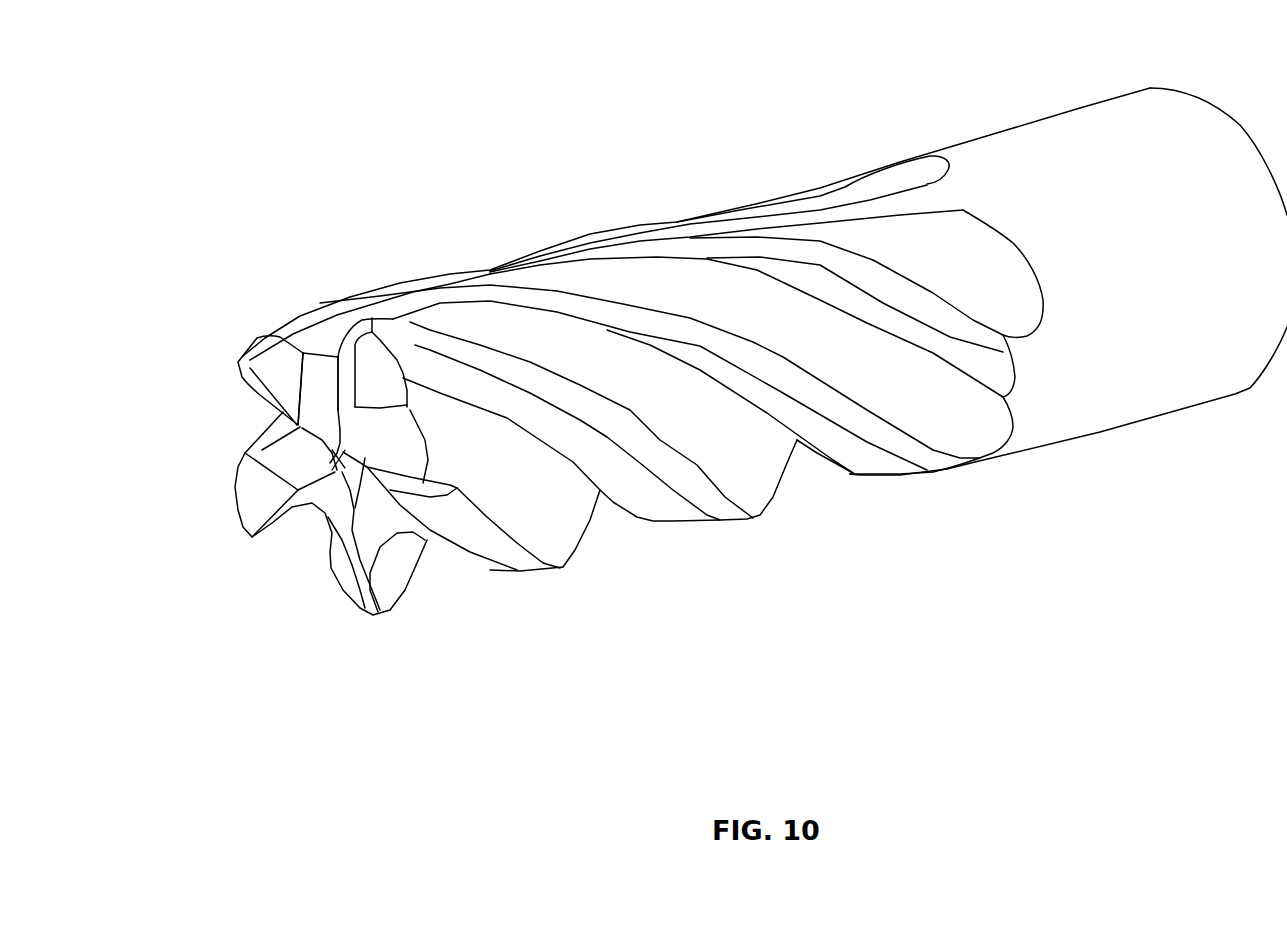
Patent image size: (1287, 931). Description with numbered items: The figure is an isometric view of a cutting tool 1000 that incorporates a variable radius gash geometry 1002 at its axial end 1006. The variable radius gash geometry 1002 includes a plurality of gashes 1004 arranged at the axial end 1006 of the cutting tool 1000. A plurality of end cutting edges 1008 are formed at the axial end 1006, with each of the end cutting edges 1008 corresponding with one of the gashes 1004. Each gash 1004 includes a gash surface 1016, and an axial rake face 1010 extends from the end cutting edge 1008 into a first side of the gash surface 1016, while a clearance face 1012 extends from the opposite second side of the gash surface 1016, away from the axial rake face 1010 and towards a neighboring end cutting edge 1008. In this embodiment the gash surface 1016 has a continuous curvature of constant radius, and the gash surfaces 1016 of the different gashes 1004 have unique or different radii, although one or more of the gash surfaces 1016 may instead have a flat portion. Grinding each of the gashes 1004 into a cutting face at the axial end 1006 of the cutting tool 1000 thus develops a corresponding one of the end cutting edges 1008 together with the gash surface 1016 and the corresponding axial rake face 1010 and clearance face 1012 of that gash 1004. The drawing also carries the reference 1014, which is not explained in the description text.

The cutting tool 1000 is at (696, 142).
The variable radius gash geometry 1002 is at (238, 256).
The gash 1004 is at (302, 536).
The axial end 1006 is at (212, 586).
The end cutting edge 1008 is at (258, 392).
The axial rake face 1010 is at (410, 463).
The clearance face 1012 is at (382, 415).
The land face 1014 is at (279, 365).
The gash surface 1016 is at (408, 438).